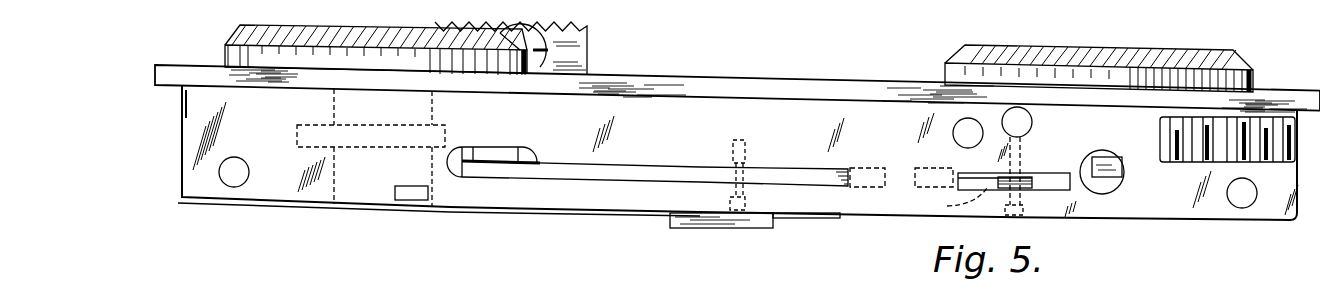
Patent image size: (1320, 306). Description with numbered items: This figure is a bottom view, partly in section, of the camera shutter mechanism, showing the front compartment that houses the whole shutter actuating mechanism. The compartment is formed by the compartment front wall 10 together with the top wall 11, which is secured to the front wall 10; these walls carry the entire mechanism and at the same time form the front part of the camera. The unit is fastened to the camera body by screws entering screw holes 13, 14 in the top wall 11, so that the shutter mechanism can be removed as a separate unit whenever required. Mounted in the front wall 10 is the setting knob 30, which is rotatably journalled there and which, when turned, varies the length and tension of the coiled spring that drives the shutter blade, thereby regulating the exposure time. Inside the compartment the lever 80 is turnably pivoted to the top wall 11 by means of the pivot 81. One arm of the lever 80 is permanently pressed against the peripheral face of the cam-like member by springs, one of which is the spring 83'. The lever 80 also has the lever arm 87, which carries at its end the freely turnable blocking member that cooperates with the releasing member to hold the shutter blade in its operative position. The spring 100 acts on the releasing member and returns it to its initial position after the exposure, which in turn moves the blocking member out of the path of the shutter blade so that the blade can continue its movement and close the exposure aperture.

The compartment front wall 10 is at (812, 92).
The top wall 11 is at (570, 192).
The screw hole 13 is at (1248, 198).
The screw hole 14 is at (236, 175).
The setting knob 30 is at (335, 60).
The lever 80 is at (483, 168).
The pivot 81 is at (746, 138).
The spring 83' is at (956, 199).
The lever arm 87 is at (840, 177).
The spring 100 is at (1048, 192).